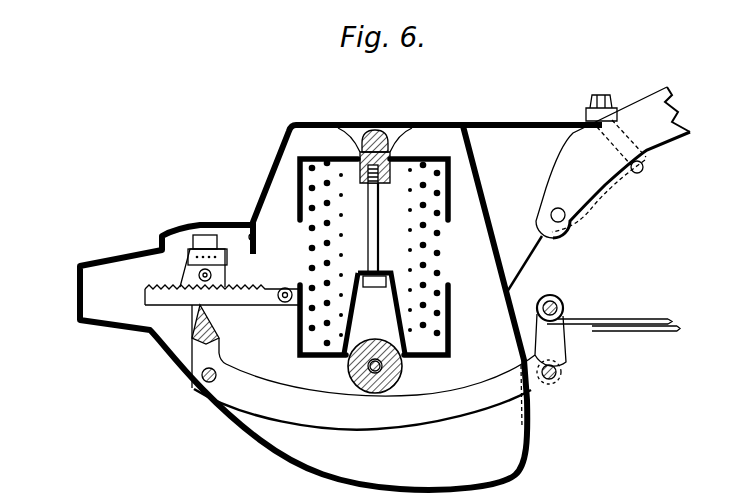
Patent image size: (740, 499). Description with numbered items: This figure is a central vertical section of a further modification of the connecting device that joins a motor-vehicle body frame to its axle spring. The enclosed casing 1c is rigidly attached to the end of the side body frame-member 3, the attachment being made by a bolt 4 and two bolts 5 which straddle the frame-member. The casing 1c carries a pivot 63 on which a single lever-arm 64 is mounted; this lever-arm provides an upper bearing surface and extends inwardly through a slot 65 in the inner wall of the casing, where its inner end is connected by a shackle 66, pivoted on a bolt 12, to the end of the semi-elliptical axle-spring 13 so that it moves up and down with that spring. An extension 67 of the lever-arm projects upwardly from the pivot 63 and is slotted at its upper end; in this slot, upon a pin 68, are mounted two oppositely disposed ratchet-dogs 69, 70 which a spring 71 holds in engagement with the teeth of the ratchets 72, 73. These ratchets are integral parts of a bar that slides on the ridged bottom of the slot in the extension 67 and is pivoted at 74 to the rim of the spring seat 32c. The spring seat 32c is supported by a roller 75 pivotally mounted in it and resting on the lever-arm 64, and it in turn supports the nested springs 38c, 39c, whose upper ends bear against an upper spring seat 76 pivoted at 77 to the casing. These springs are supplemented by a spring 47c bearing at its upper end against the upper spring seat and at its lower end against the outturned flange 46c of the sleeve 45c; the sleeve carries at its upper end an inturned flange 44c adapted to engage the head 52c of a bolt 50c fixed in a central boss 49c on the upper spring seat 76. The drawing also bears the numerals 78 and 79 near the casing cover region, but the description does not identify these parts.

The enclosed casing 1c is at (309, 122).
The side body frame-member 3 is at (683, 117).
The bolt 4 is at (565, 216).
The bolts 5 is at (601, 95).
The bolt 12 is at (557, 305).
The semi-elliptical spring 13 is at (651, 318).
The spring seat 32c is at (437, 358).
The nested spring 38c is at (331, 163).
The nested spring 39c is at (340, 183).
The inturned flange 44c is at (386, 274).
The sleeve 45c is at (408, 295).
The outturned flange 46c is at (410, 350).
The spring 47c is at (372, 143).
The central boss 49c is at (346, 166).
The bolt 50c is at (377, 239).
The head of bolt 52c is at (376, 287).
The pivot 63 is at (194, 390).
The lever-arm 64 is at (437, 409).
The slot 65 is at (530, 432).
The shackle 66 is at (553, 341).
The extension of lever-arm 67 is at (220, 334).
The pin 68 is at (182, 275).
The ratchet-dog 69 is at (182, 266).
The ratchet-dog 70 is at (226, 258).
The spring 71 is at (194, 283).
The ratchet 72 is at (187, 289).
The ratchet 73 is at (238, 305).
The pivot 74 is at (285, 303).
The roller 75 is at (403, 376).
The upper spring seat 76 is at (413, 154).
The pivot 77 is at (392, 148).
The cover 78 is at (174, 230).
The wall 79 is at (257, 238).